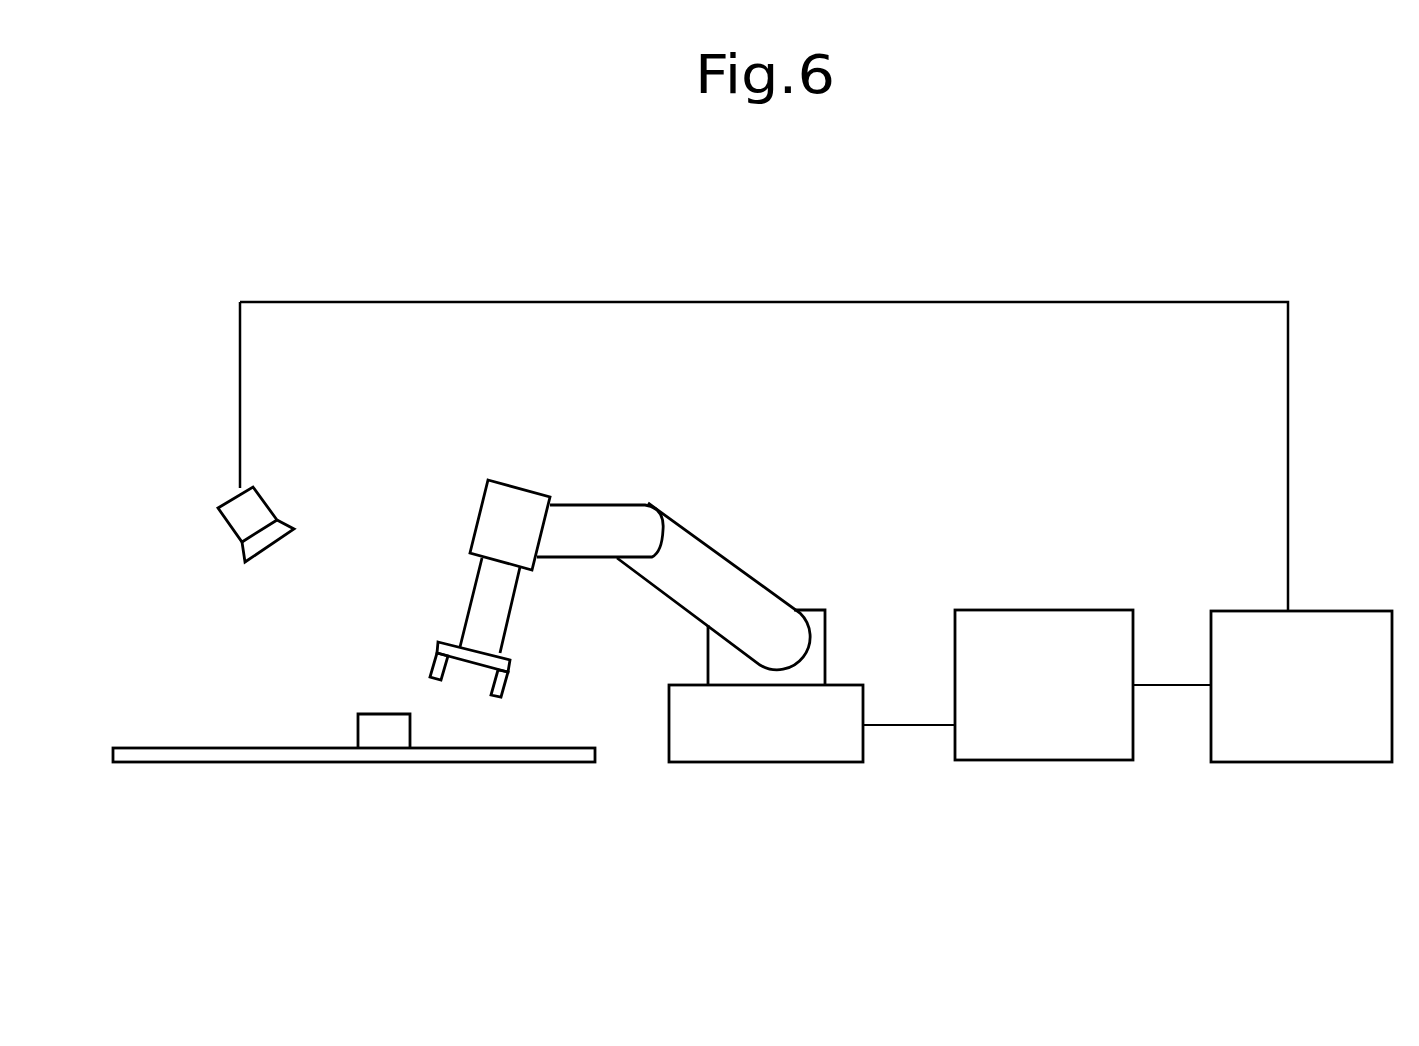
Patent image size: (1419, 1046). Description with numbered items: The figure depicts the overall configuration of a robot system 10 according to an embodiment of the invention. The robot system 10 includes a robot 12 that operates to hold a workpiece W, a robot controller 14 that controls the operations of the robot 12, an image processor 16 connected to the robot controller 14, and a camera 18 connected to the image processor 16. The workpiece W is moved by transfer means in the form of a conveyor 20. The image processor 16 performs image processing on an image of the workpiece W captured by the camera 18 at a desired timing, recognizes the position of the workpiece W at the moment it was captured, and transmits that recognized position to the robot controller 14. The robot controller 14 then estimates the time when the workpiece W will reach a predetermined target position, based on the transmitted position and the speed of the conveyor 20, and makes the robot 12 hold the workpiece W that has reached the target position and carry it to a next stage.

The robot system 10 is at (919, 282).
The robot 12 is at (733, 580).
The robot controller 14 is at (1073, 610).
The image processor 16 is at (1322, 611).
The camera 18 is at (263, 513).
The conveyor 20 is at (539, 762).
The workpiece W is at (373, 737).